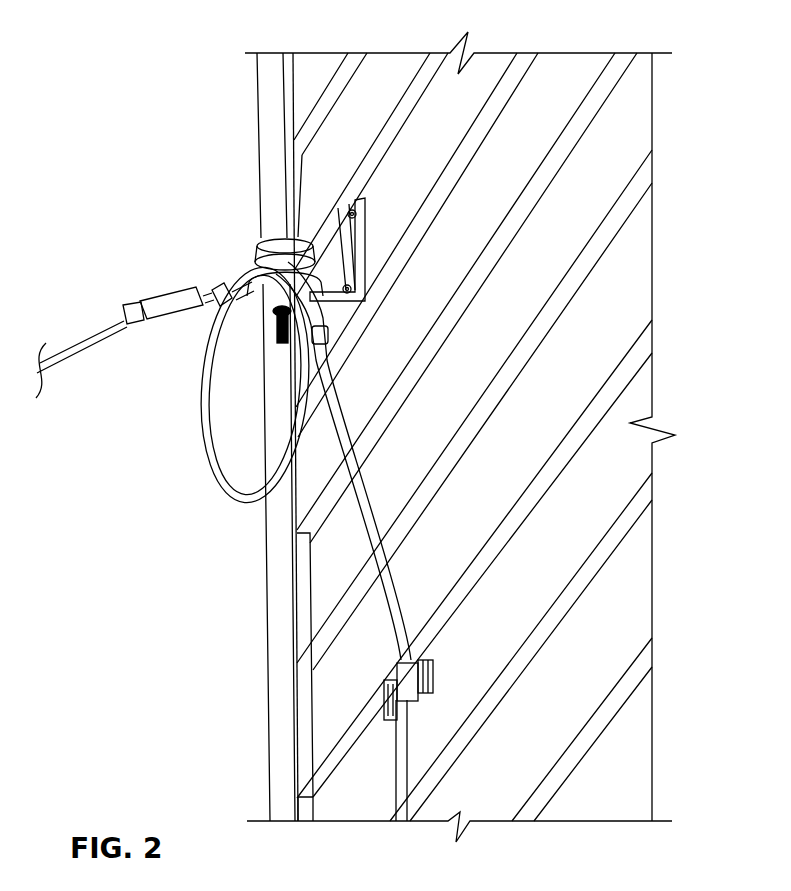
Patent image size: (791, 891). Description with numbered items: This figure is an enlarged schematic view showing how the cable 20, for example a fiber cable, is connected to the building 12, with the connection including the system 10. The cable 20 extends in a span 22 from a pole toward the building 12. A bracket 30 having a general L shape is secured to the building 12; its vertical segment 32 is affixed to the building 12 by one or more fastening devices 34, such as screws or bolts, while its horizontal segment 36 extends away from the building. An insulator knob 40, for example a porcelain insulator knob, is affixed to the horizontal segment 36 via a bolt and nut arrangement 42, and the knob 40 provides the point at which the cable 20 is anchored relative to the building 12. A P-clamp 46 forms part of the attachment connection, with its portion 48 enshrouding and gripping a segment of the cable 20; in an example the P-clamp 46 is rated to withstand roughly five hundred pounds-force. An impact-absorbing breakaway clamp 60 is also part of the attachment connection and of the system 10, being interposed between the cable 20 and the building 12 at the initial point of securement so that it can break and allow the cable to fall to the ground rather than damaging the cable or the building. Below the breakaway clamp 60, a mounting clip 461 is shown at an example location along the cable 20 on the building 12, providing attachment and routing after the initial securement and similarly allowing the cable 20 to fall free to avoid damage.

The system 10 is at (115, 52).
The building 12 is at (307, 103).
The cable 20 is at (61, 370).
The span 22 is at (95, 340).
The bracket 30 is at (372, 212).
The vertical segment 32 is at (345, 240).
The fastening device 34 is at (349, 210).
The horizontal segment 36 is at (329, 336).
The insulator knob 40 is at (268, 249).
The bolt and nut arrangement 42 is at (275, 318).
The P-clamp 46 is at (153, 292).
The portion 48 is at (160, 312).
The impact-absorbing breakaway clamp 60 is at (216, 274).
The mounting clip 461 is at (385, 693).